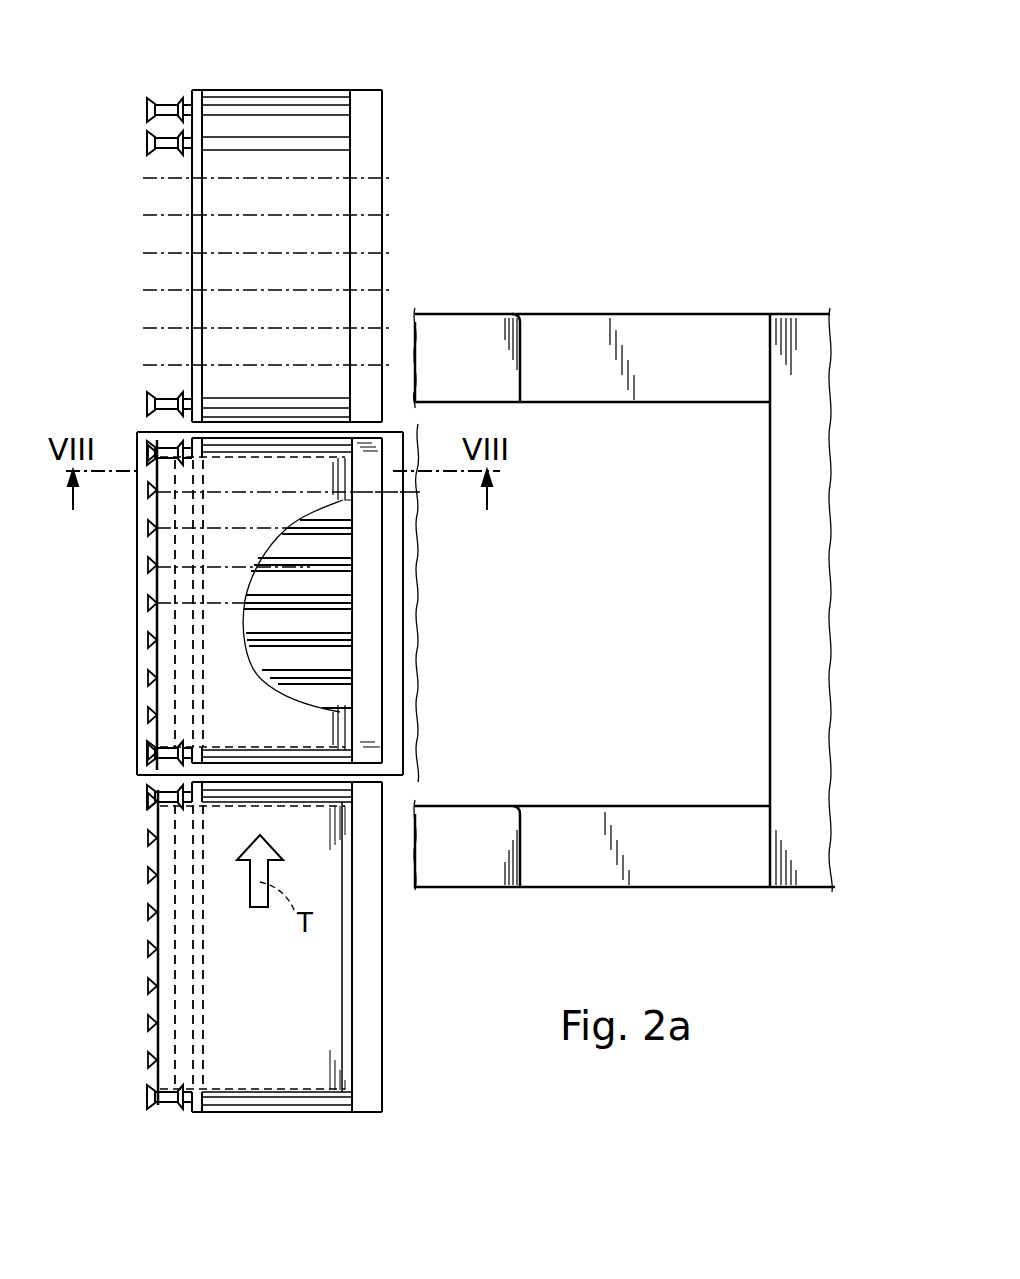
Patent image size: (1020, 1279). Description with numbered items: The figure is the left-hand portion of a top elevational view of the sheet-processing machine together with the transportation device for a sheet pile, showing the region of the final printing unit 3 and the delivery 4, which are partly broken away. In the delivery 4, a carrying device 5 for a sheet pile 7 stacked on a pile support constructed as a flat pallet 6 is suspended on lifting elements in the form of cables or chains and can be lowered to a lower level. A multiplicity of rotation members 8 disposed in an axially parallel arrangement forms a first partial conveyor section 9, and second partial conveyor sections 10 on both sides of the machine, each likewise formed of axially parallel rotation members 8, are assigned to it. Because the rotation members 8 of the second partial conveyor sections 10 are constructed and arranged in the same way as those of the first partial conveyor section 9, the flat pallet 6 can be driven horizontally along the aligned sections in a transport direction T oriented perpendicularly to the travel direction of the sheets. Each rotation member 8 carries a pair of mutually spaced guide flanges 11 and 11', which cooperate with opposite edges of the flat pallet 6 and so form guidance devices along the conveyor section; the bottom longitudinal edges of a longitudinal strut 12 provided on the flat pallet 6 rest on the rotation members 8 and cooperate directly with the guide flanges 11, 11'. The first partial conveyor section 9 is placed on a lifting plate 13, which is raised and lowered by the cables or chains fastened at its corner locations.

The final printing unit 3 is at (812, 313).
The delivery 4 is at (416, 293).
The carrying device 5 is at (122, 570).
The flat pallet 6 is at (215, 922).
The sheet pile 7 is at (220, 651).
The rotation member 8 is at (312, 108).
The first partial conveyor section 9 is at (322, 620).
The second partial conveyor section 10 is at (145, 273).
The guide flange 11 is at (111, 564).
The guide flange 11' is at (225, 562).
The longitudinal strut 12 is at (163, 733).
The lifting plate 13 is at (142, 605).